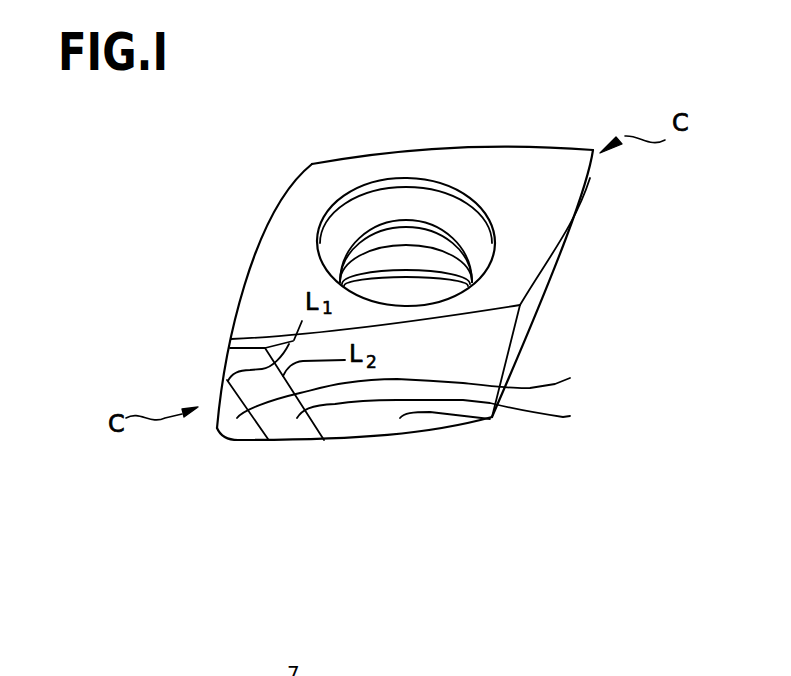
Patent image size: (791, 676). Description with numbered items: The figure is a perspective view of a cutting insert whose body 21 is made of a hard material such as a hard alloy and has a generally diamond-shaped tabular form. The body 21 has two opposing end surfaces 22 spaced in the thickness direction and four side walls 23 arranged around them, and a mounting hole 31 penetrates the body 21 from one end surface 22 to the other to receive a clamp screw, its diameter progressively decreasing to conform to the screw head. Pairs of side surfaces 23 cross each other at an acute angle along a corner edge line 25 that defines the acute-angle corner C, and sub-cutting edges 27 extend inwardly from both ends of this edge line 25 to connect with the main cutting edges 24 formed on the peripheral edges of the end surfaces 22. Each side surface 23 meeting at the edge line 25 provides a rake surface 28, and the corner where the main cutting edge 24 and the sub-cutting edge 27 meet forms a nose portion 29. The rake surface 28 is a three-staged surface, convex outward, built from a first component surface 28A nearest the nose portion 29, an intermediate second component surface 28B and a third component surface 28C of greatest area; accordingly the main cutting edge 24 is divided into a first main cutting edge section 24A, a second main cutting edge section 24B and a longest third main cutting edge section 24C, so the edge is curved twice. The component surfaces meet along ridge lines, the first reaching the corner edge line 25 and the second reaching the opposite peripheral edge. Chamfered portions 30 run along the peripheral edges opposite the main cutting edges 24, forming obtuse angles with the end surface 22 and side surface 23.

The body of the cutting insert 21 is at (626, 116).
The end surface 22 is at (497, 166).
The side wall 23 is at (522, 337).
The main cutting edge 24 is at (539, 286).
The first main cutting edge section 24A is at (235, 300).
The second main cutting edge section 24B is at (252, 258).
The third main cutting edge section 24C is at (268, 222).
The corner edge line 25 is at (593, 178).
The sub-cutting edge 27 is at (227, 366).
The rake surface 28 is at (625, 357).
The first component surface 28A is at (431, 390).
The second component surface 28B is at (460, 404).
The third component surface 28C is at (490, 419).
The nose portion 29 is at (208, 338).
The chamfered portion 30 is at (245, 322).
The mounting hole 31 is at (398, 181).